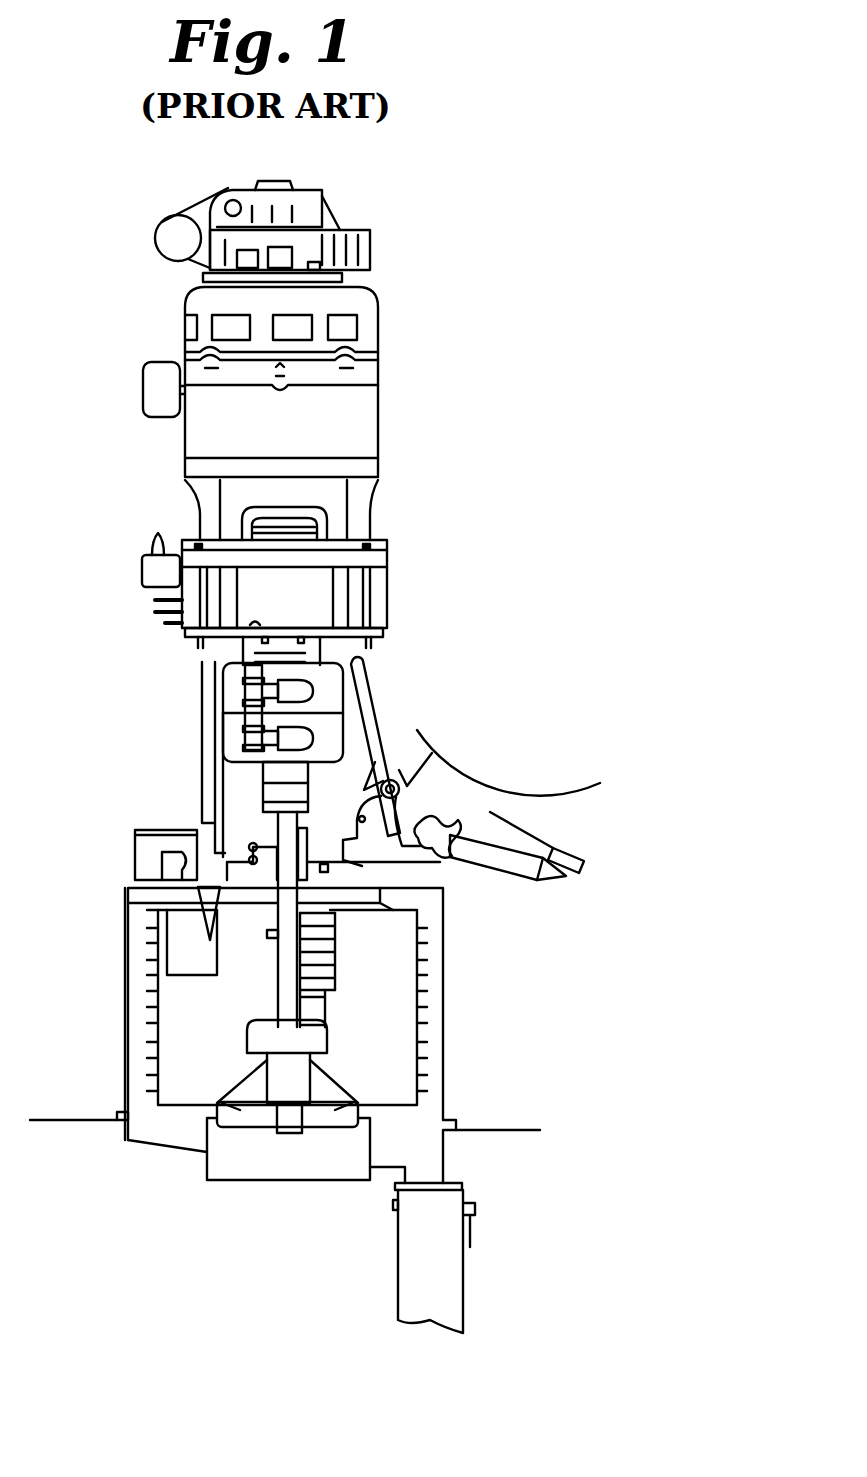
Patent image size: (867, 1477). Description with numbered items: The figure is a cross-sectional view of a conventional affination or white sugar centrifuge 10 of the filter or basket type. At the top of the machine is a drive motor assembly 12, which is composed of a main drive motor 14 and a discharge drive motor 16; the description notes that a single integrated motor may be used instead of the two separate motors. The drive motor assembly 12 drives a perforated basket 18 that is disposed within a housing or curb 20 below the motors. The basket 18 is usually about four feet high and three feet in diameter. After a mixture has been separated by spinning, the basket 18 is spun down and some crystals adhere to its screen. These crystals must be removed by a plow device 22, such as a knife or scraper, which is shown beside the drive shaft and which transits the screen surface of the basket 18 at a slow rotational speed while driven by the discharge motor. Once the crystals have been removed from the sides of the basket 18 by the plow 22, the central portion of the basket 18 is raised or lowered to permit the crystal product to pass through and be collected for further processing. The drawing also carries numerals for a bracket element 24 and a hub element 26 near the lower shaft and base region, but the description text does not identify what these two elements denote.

The prior art spray apparatus 10 is at (602, 470).
The drive motor assembly 12 is at (93, 309).
The main drive motor 14 is at (378, 396).
The discharge drive motor 16 is at (325, 213).
The perforated basket 18 is at (443, 1012).
The housing or curb 20 is at (443, 1070).
The plow device 22 is at (343, 687).
The bracket 24 is at (177, 937).
The hub 26 is at (228, 1082).